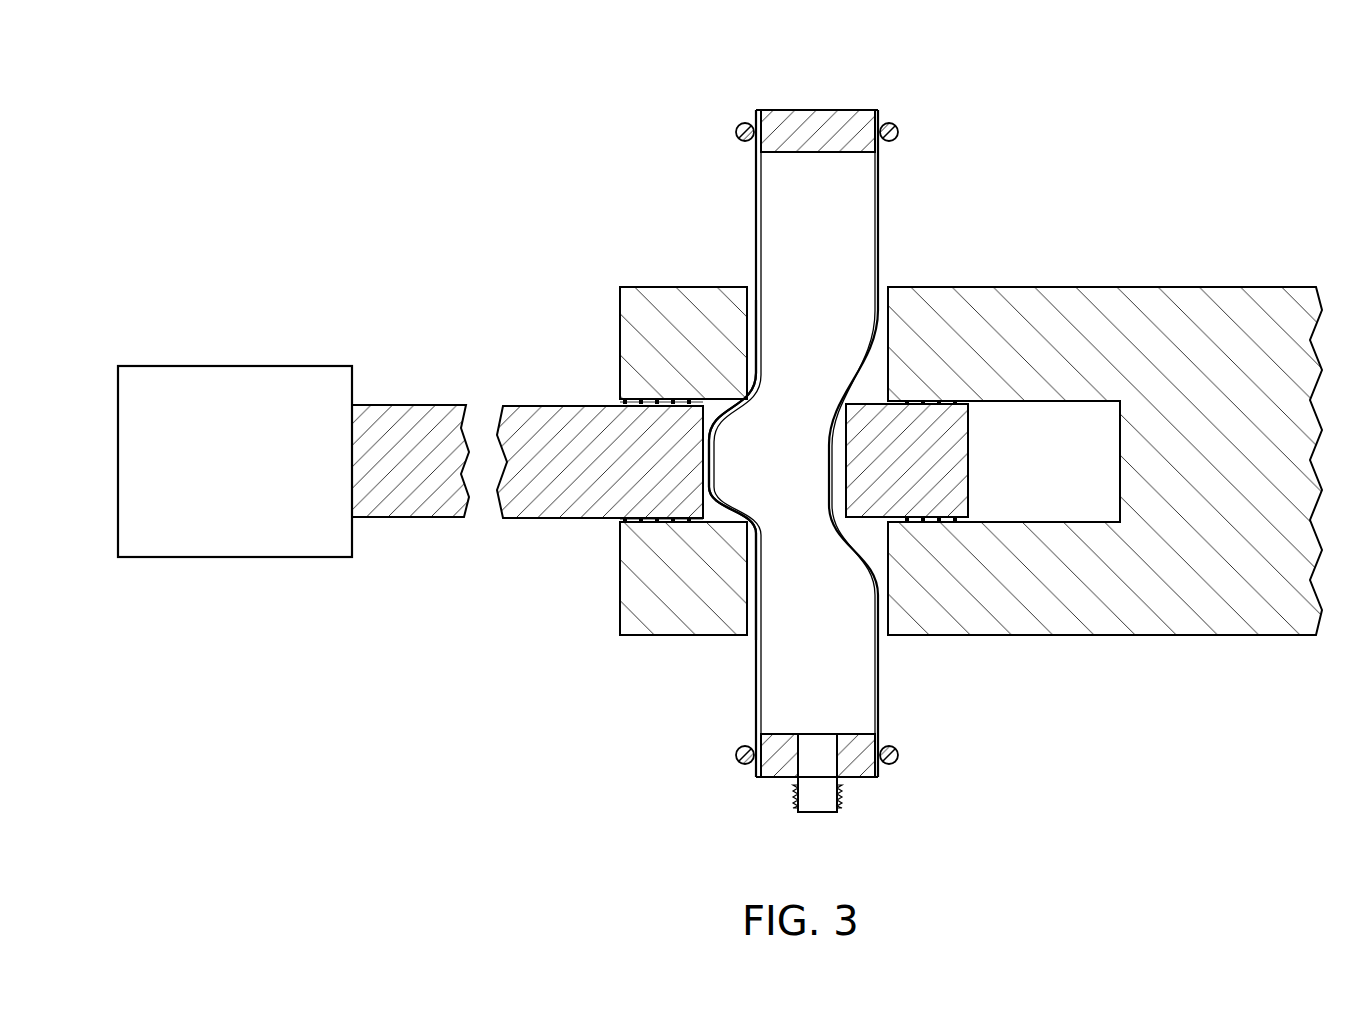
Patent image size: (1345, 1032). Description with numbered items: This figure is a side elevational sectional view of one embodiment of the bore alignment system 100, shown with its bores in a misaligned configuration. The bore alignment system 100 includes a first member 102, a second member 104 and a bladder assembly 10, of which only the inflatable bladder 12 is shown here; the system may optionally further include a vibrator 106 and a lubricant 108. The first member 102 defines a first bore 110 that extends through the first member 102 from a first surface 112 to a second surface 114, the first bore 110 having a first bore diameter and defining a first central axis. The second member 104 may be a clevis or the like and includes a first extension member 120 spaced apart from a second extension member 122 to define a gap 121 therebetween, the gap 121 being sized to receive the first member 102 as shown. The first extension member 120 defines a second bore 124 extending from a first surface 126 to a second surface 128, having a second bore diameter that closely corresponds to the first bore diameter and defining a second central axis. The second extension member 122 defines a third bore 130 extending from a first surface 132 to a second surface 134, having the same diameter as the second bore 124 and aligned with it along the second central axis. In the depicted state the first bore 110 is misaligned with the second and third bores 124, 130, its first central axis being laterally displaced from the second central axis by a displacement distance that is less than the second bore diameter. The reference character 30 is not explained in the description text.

The bladder assembly 10 is at (841, 413).
The inflatable bladder 12 is at (878, 175).
The tube wall 30 is at (878, 220).
The bore alignment system 100 is at (720, 443).
The first member 102 is at (400, 405).
The second member 104 is at (1115, 287).
The vibrator 106 is at (233, 366).
The lubricant 108 is at (795, 459).
The first bore 110 is at (712, 437).
The first surface 112 is at (512, 406).
The second surface 114 is at (518, 518).
The first extension member 120 is at (633, 287).
The gap 121 is at (1050, 451).
The second extension member 122 is at (630, 635).
The second bore 124 is at (748, 350).
The first surface 126 is at (1005, 287).
The second surface 128 is at (1010, 401).
The third bore 130 is at (748, 617).
The first surface 132 is at (1020, 521).
The second surface 134 is at (1085, 635).